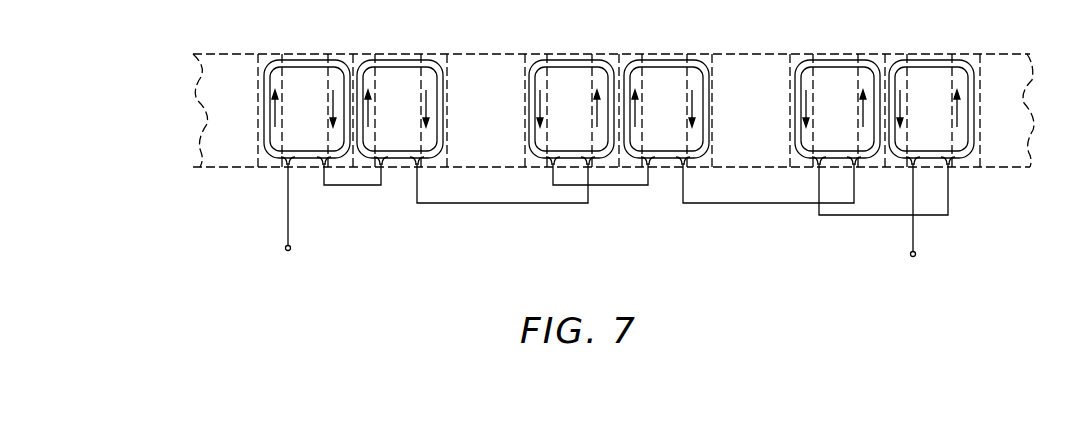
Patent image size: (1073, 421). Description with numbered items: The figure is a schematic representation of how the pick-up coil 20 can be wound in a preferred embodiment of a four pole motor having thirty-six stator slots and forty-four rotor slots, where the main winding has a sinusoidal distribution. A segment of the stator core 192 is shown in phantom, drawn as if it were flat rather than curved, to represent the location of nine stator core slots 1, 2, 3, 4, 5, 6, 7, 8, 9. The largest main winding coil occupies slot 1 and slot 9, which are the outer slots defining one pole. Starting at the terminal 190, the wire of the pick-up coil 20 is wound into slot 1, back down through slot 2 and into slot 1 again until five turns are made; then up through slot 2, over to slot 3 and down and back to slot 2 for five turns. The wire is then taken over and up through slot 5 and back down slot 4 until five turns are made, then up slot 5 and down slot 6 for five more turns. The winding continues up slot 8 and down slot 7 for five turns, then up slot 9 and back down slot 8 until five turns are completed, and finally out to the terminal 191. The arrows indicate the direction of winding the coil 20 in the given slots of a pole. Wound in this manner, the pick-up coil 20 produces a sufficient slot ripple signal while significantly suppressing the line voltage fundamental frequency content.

The stator core slot 1 is at (259, 71).
The stator core slot 2 is at (383, 88).
The stator core slot 3 is at (448, 78).
The stator core slot 4 is at (523, 90).
The stator core slot 5 is at (597, 90).
The stator core slot 6 is at (716, 78).
The stator core slot 7 is at (790, 77).
The stator core slot 8 is at (913, 90).
The stator core slot 9 is at (981, 78).
The pick-up coil 20 is at (637, 235).
The terminal 190 is at (289, 251).
The terminal 191 is at (914, 257).
The stator core 192 is at (215, 54).